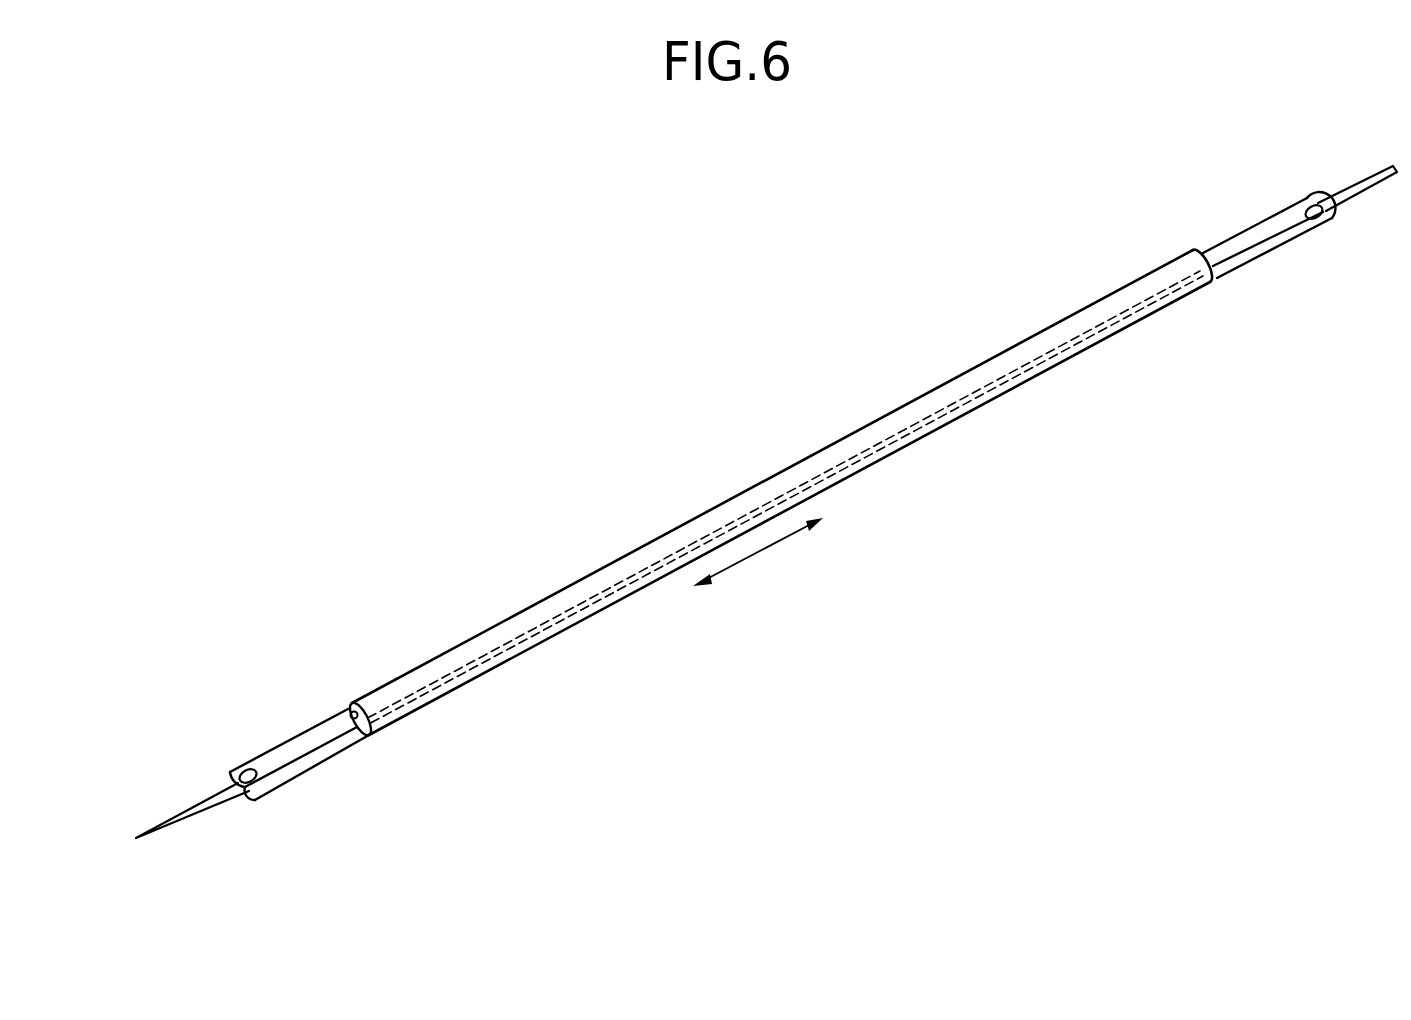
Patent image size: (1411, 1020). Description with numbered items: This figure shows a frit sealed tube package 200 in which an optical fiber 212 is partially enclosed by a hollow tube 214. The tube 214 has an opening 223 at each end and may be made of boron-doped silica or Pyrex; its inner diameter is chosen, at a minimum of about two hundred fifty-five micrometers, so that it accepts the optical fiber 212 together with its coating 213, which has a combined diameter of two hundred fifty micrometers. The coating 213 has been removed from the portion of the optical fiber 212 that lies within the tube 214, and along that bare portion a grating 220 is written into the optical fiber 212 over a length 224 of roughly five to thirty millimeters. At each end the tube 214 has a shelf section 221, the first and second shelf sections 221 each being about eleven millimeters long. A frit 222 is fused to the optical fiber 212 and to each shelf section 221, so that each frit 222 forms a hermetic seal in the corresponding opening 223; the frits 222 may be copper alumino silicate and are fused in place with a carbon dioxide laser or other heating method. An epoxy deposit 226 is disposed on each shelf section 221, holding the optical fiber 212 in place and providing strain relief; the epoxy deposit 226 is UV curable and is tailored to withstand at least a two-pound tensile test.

The frit sealed tube package 200 is at (884, 262).
The optical fiber 212 is at (462, 668).
The coating 213 is at (192, 815).
The hollow tube 214 is at (443, 652).
The grating 220 is at (730, 518).
The shelf section 221 is at (305, 777).
The frit 222 is at (343, 715).
The opening 223 is at (372, 725).
The length 224 is at (758, 561).
The epoxy deposit 226 is at (246, 768).